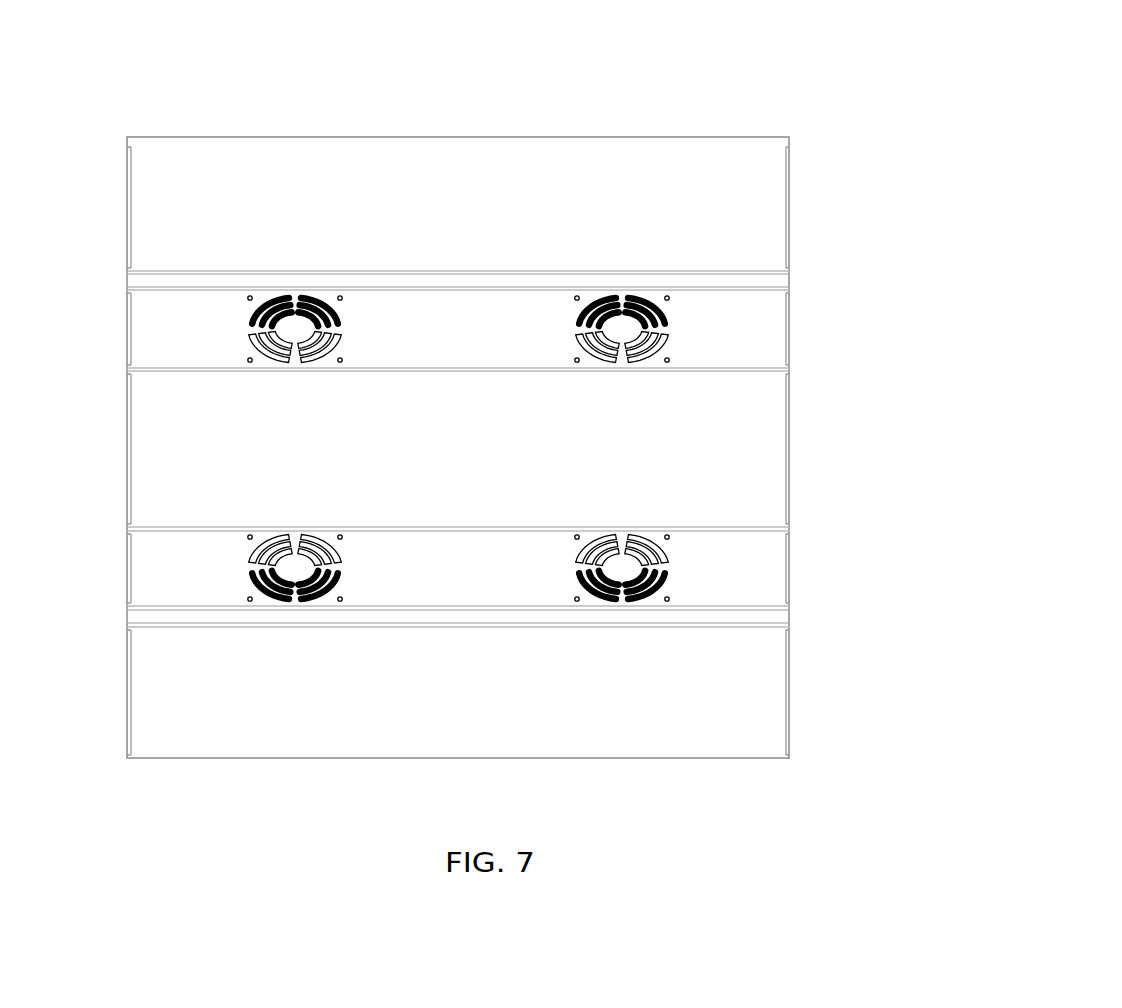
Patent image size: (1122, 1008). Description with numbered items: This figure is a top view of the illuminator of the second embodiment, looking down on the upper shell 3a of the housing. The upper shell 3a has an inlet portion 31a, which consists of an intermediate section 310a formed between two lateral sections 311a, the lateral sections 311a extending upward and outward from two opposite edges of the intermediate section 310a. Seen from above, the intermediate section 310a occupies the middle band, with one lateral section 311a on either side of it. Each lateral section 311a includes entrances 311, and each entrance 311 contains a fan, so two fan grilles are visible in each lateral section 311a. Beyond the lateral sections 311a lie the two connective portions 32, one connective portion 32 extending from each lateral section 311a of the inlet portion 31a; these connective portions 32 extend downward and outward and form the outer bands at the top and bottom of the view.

The upper shell 3a is at (243, 128).
The connective portion 32 is at (723, 165).
The inlet portion 31a is at (1005, 383).
The lateral section 311a is at (760, 343).
The intermediate section 310a is at (760, 420).
The entrance 311 is at (253, 320).